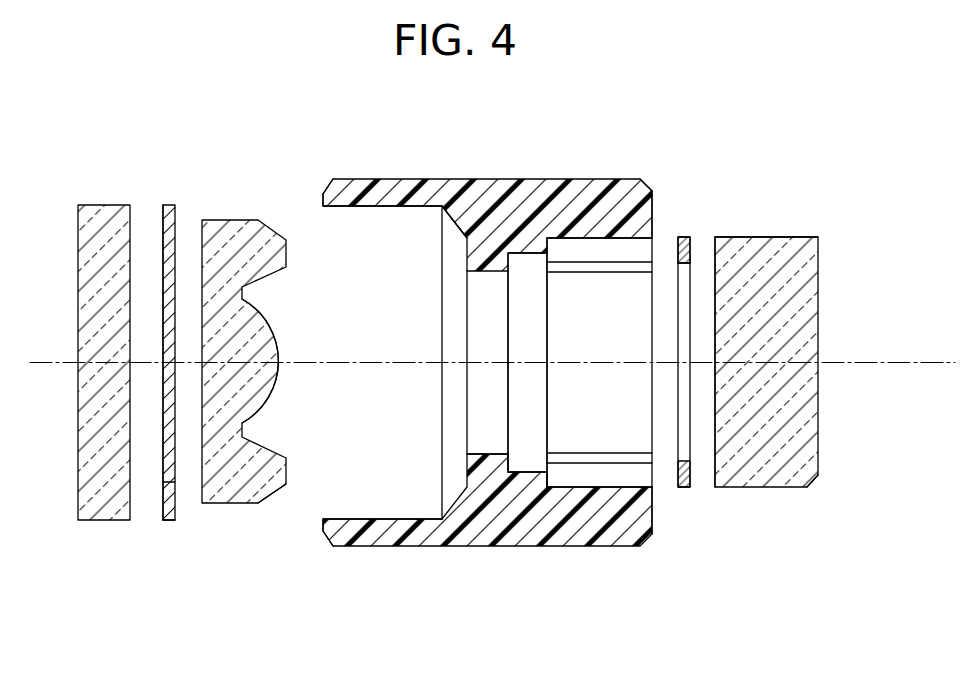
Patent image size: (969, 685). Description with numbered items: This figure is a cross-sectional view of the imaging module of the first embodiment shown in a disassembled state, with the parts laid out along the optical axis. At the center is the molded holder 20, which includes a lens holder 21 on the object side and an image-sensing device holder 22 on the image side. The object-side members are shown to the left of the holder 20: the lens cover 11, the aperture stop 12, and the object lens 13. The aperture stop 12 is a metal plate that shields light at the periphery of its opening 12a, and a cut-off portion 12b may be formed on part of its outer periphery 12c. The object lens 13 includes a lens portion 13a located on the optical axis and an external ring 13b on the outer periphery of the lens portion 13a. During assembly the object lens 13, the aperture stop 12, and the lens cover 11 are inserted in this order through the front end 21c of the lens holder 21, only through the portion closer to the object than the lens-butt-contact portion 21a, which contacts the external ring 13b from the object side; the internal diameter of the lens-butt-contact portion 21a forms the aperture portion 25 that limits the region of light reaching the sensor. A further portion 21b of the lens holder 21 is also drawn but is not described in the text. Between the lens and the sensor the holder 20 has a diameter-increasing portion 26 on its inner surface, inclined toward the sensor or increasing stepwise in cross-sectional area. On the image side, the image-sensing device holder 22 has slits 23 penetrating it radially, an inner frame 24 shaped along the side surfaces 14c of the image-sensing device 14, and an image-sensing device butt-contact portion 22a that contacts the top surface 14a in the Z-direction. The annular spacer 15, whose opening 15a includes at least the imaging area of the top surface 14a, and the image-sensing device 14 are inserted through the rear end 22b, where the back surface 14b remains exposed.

The lens cover 11 is at (100, 213).
The aperture stop 12 is at (165, 204).
The opening 12a is at (168, 353).
The cut-off portion 12b is at (167, 483).
The outer periphery 12c is at (168, 521).
The object lens 13 is at (234, 226).
The lens portion 13a is at (278, 333).
The external ring 13b is at (291, 478).
The image-sensing device 14 is at (792, 250).
The top surface 14a is at (717, 434).
The back surface 14b is at (820, 470).
The side surfaces 14c is at (785, 240).
The spacer 15 is at (688, 238).
The opening 15a is at (684, 264).
The holder 20 is at (502, 192).
The lens holder 21 is at (392, 530).
The lens-butt-contact portion 21a is at (443, 218).
The rear inner edge of front barrel portion 21b is at (340, 512).
The front end 21c is at (315, 193).
The image-sensing device holder 22 is at (615, 530).
The image-sensing device butt-contact portion 22a is at (547, 484).
The rear end 22b is at (653, 210).
The slits 23 is at (638, 250).
The inner frame 24 is at (632, 420).
The aperture portion 25 is at (485, 447).
The diameter-increasing portion 26 is at (523, 272).